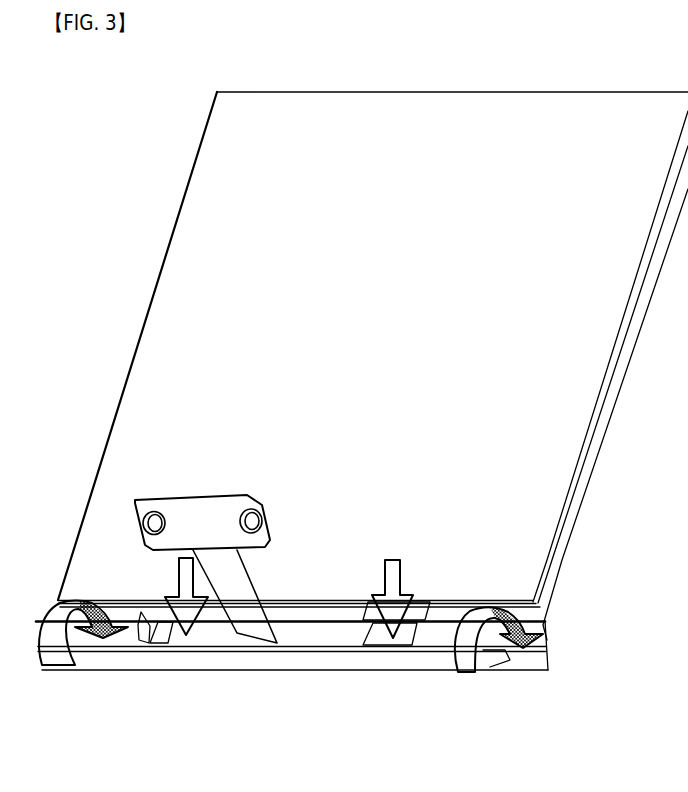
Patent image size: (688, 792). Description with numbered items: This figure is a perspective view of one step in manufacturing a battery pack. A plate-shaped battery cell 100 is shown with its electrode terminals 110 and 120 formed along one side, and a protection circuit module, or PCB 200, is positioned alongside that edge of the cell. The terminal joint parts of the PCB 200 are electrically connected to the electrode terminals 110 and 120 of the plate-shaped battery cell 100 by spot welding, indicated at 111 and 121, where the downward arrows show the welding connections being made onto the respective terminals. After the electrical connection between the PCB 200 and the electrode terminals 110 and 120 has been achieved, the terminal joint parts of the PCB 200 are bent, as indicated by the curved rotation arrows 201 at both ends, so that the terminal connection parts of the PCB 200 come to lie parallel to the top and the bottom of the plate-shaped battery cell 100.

The plate-shaped battery cell 100 is at (381, 275).
The protection circuit module 200 is at (283, 673).
The electrode terminal 110 is at (173, 633).
The spot welding 111 is at (179, 580).
The electrode terminal 120 is at (403, 633).
The spot welding 121 is at (394, 572).
The bending of terminal joint parts 201 is at (57, 655).